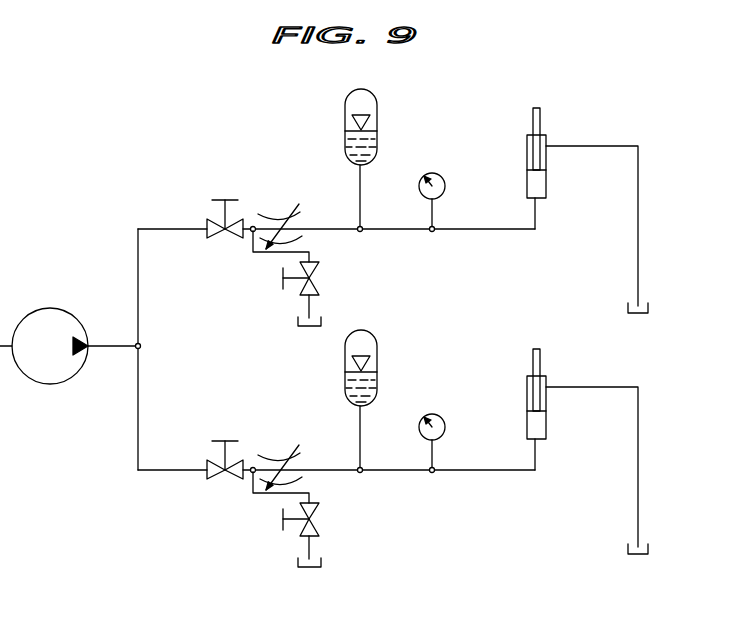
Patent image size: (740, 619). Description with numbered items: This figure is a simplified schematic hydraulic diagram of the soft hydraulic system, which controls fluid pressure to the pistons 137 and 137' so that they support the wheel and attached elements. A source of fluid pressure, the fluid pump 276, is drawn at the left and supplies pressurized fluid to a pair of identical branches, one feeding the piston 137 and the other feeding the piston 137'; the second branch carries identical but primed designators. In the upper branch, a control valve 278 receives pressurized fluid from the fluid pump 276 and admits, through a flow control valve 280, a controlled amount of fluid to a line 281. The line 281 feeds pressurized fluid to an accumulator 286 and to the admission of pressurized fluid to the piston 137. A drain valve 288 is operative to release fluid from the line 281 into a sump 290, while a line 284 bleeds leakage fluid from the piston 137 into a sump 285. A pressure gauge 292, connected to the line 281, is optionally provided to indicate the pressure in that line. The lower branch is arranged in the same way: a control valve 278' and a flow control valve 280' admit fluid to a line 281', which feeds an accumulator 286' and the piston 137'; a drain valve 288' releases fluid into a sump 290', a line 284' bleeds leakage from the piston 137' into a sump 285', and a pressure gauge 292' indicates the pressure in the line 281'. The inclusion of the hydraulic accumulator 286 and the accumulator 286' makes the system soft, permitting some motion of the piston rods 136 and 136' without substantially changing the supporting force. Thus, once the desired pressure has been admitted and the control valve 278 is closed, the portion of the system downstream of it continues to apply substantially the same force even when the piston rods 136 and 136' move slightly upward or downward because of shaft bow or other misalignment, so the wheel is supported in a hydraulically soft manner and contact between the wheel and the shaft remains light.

The fluid pump 276 is at (52, 307).
The control valve 278 is at (208, 245).
The flow control valve 280 is at (279, 206).
The line 281 is at (390, 205).
The accumulator 286 is at (394, 159).
The drain valve 288 is at (334, 275).
The sump 290 is at (342, 311).
The pressure gauge 292 is at (457, 191).
The piston rod 136 is at (569, 130).
The piston 137 is at (568, 166).
The line 284 is at (623, 226).
The sump 285 is at (668, 311).
The control valve 278' is at (208, 486).
The flow control valve 280' is at (279, 447).
The line 281' is at (392, 446).
The accumulator 286' is at (397, 400).
The drain valve 288' is at (336, 516).
The sump 290' is at (345, 552).
The pressure gauge 292' is at (460, 432).
The piston rod 136' is at (572, 371).
The piston 137' is at (570, 407).
The line 284' is at (625, 467).
The sump 285' is at (670, 552).